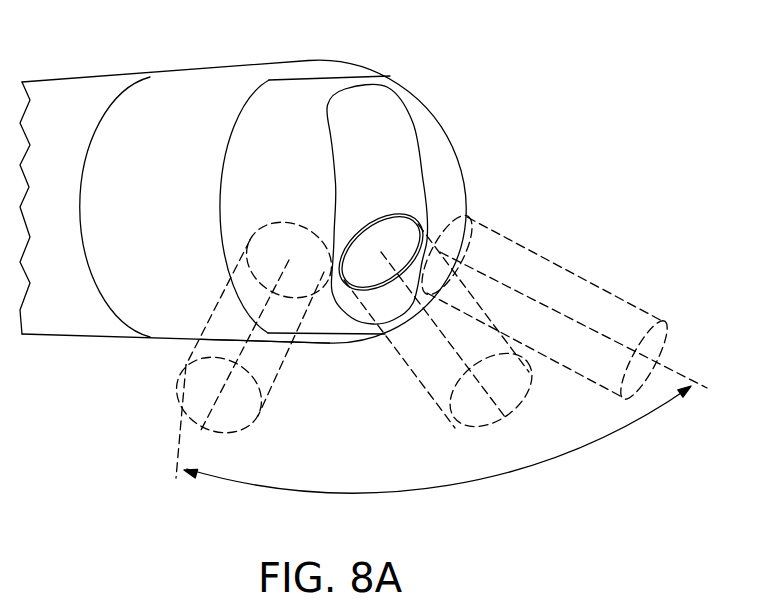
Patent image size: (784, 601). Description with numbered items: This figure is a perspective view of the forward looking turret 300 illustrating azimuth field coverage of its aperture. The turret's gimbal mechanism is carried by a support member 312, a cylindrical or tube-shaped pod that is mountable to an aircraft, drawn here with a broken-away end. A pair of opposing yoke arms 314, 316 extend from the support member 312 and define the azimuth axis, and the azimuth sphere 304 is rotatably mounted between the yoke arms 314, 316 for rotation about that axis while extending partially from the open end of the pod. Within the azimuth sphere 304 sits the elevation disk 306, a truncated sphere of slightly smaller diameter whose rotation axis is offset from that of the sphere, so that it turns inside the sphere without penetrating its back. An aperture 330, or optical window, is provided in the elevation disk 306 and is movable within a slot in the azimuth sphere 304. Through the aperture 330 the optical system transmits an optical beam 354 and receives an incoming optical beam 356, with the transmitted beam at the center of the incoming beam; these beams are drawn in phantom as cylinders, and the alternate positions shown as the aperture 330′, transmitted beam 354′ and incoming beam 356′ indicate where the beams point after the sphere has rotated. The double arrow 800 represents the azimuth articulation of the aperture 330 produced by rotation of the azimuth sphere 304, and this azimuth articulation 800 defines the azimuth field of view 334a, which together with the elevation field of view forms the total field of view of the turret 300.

The forward looking turret 300 is at (530, 140).
The support member 312 is at (197, 71).
The yoke arm 314 is at (318, 63).
The azimuth sphere 304 is at (443, 138).
The elevation disk 306 is at (378, 110).
The yoke arm 316 is at (320, 347).
The aperture 330 is at (390, 209).
The ring in first alternate position 330′ is at (470, 226).
The incoming optical beam 356 is at (437, 386).
The channel in first alternate position 356′ is at (578, 278).
The transmitted optical beam 354 is at (511, 405).
The channel end in first alternate position 354′ is at (668, 364).
The double arrow 800 is at (532, 468).
The azimuth field of view 334a is at (233, 500).